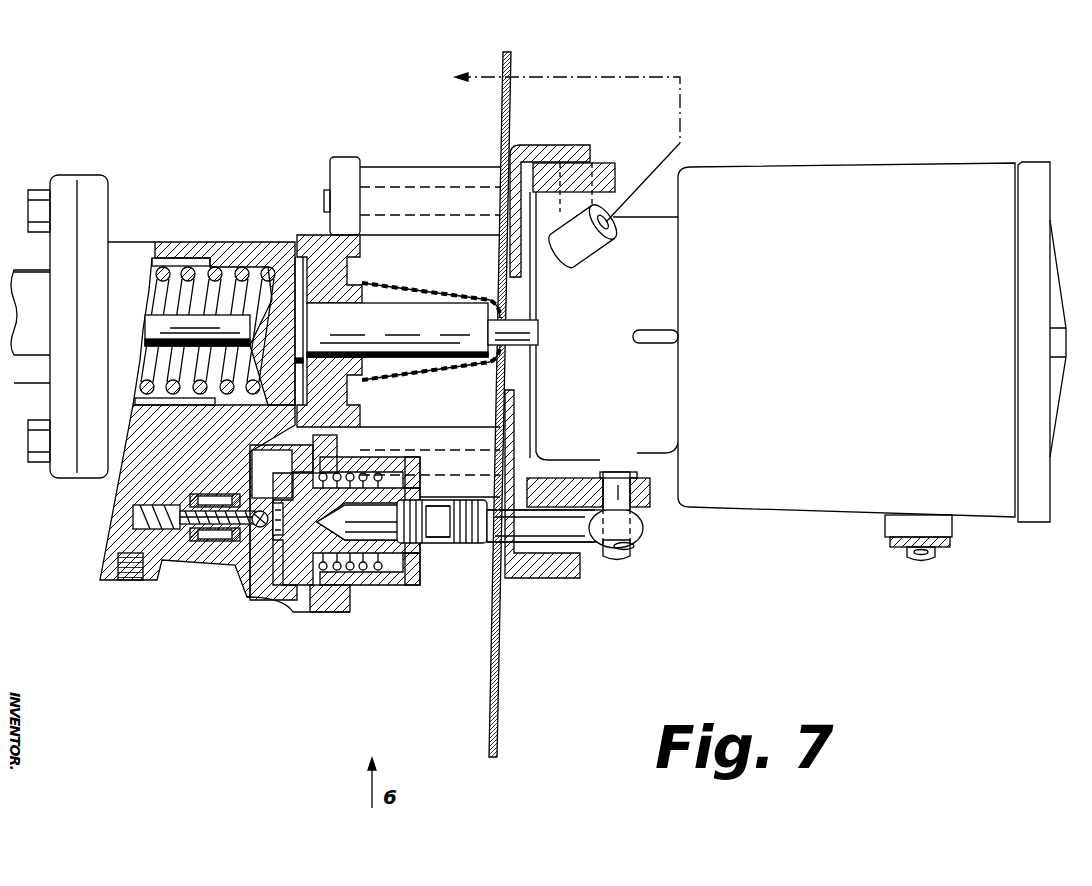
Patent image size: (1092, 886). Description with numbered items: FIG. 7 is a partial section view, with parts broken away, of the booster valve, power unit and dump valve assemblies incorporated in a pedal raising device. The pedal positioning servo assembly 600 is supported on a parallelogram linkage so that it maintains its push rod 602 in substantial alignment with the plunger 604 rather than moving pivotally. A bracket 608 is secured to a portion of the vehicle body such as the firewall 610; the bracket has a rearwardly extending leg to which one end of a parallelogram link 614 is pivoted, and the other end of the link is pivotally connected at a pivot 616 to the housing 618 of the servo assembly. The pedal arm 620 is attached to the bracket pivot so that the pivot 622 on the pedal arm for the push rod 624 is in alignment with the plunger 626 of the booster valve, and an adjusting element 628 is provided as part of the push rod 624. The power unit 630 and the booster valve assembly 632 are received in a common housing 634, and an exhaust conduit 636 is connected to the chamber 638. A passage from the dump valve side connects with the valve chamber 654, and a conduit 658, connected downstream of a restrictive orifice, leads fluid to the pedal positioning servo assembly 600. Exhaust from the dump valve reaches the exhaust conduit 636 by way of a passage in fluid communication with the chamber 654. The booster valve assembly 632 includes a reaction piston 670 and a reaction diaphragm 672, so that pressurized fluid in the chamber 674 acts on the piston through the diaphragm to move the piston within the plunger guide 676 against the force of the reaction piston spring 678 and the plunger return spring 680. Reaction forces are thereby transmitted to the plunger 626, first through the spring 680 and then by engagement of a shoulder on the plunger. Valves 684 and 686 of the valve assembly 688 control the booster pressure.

The pedal positioning servo assembly 600 is at (823, 165).
The push rod 602 is at (532, 326).
The plunger 604 is at (430, 305).
The bracket 608 is at (556, 147).
The firewall 610 is at (492, 702).
The parallelogram link 614 is at (948, 543).
The pivotal connection 616 is at (918, 562).
The housing 618 is at (935, 178).
The pedal arm 620 is at (640, 500).
The pivot 622 is at (613, 556).
The push rod 624 is at (583, 525).
The plunger 626 is at (414, 560).
The adjusting element 628 is at (460, 545).
The power unit 630 is at (230, 241).
The booster valve assembly 632 is at (247, 600).
The common housing 634 is at (175, 241).
The exhaust conduit 636 is at (130, 573).
The chamber 638 is at (130, 517).
The valve chamber 654 is at (200, 478).
The conduit 658 is at (647, 77).
The reaction piston 670 is at (307, 612).
The reaction diaphragm 672 is at (287, 585).
The chamber 674 is at (274, 585).
The plunger guide 676 is at (380, 590).
The reaction piston spring 678 is at (372, 490).
The plunger return spring 680 is at (335, 470).
The valve 684 is at (263, 510).
The valve 686 is at (224, 534).
The valve assembly 688 is at (183, 530).